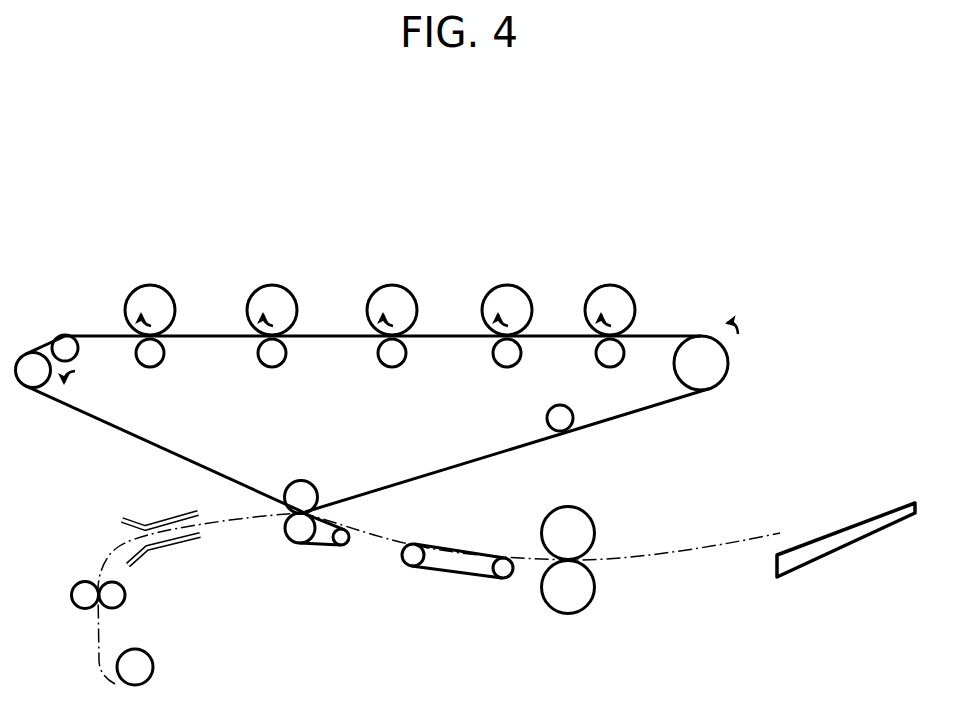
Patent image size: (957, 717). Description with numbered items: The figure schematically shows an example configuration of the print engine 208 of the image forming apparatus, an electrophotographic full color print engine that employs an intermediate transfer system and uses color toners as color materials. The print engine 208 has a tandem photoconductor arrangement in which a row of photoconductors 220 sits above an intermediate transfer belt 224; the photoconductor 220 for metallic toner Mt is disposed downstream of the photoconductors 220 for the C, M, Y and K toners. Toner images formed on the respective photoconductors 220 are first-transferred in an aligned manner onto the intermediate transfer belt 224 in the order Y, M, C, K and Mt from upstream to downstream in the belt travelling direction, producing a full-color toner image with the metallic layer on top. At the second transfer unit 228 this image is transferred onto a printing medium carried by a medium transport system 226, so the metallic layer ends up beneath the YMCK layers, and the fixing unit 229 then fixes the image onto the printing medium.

The print engine 208 is at (612, 150).
The photoconductor 220 is at (172, 303).
The intermediate transfer belt 224 is at (230, 341).
The medium transport system 226 is at (233, 528).
The second transfer unit 228 is at (283, 528).
The fixing unit 229 is at (580, 613).